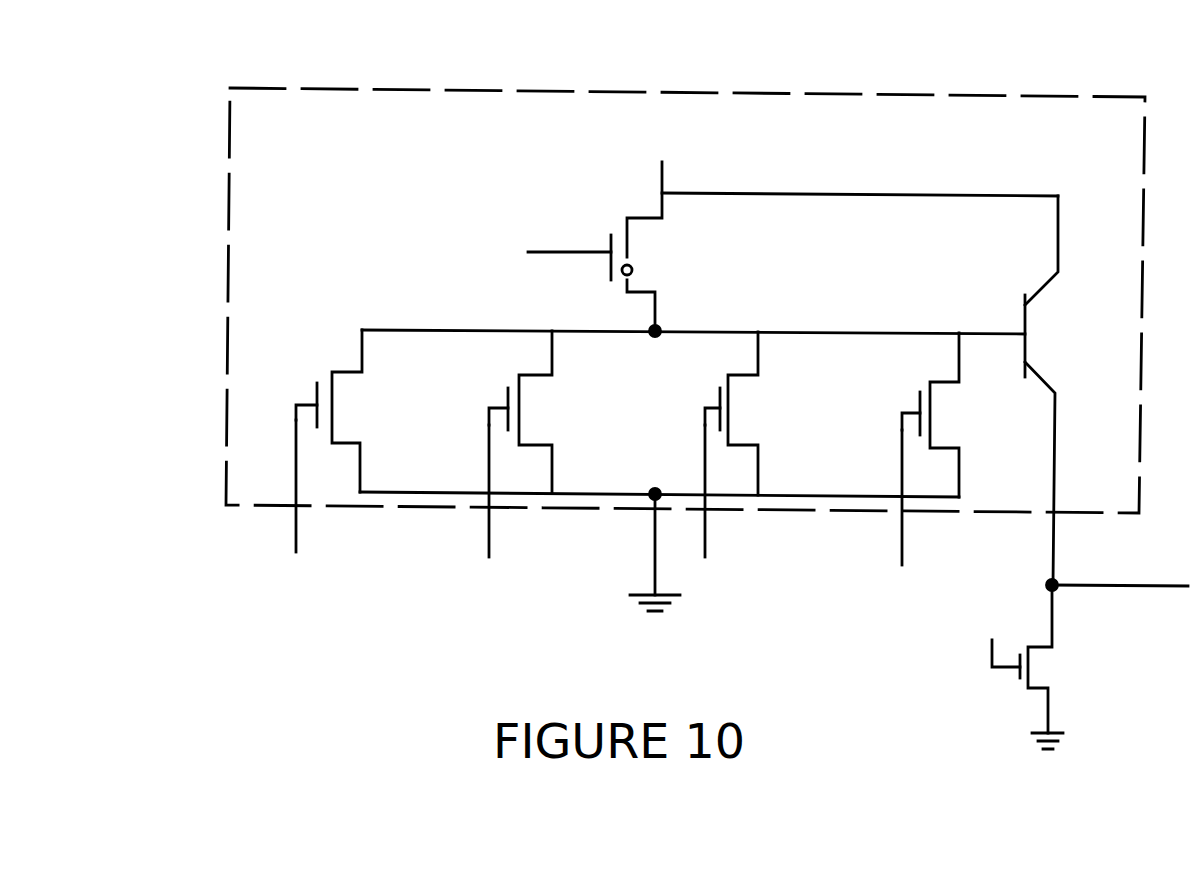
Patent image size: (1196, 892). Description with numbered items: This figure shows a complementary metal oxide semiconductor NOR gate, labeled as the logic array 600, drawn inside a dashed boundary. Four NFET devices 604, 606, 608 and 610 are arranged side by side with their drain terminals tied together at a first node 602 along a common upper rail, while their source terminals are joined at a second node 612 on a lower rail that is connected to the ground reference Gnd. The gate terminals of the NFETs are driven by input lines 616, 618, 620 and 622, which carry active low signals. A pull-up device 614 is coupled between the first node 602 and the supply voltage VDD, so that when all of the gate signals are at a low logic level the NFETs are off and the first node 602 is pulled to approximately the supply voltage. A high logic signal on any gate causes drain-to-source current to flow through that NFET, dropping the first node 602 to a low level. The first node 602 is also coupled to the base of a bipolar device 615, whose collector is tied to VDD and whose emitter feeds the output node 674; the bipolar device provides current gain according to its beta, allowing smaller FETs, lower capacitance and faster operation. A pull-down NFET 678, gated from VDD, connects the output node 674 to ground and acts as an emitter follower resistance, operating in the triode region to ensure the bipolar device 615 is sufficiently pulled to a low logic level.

The logic array 600 is at (996, 96).
The first node 602 is at (658, 327).
The NFET device 604 is at (332, 380).
The NFET device 606 is at (519, 383).
The NFET device 608 is at (728, 382).
The NFET device 610 is at (930, 385).
The second node 612 is at (655, 500).
The pull-up device 614 is at (611, 250).
The bipolar device 615 is at (1022, 318).
The input line 616 is at (296, 528).
The input line 618 is at (489, 530).
The input line 620 is at (705, 530).
The input line 622 is at (902, 535).
The output node 674 is at (1055, 584).
The pull-down NFET 678 is at (1035, 669).